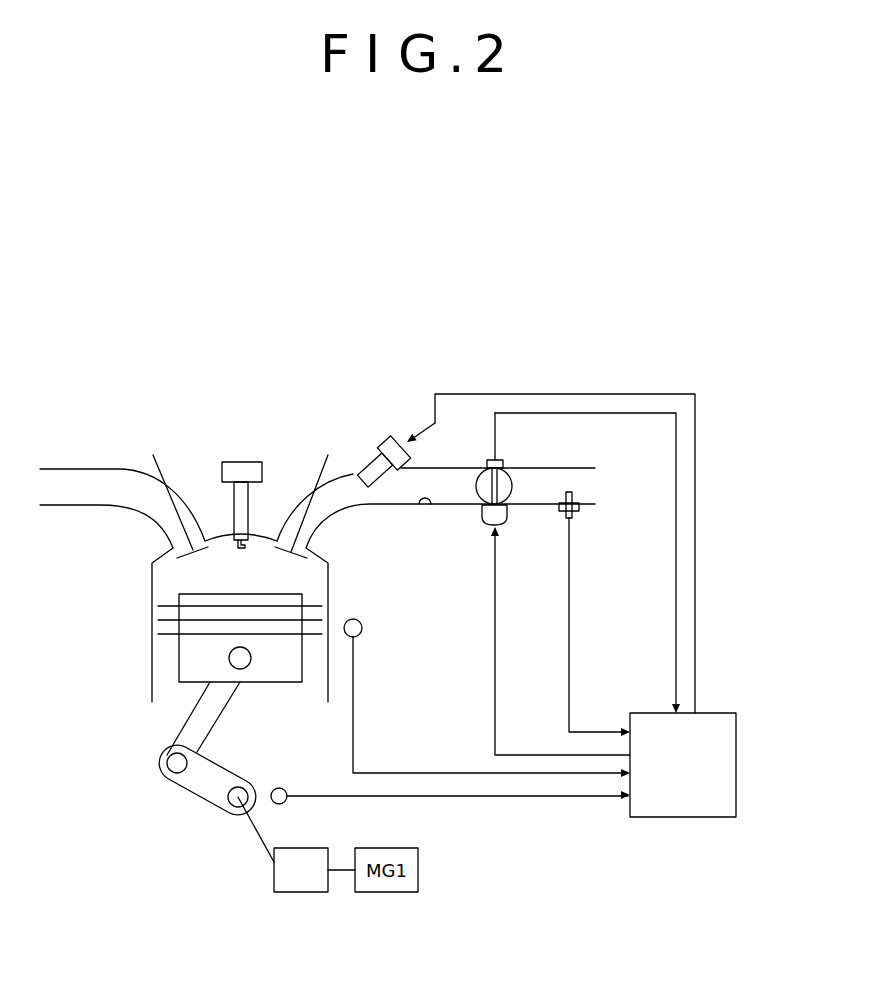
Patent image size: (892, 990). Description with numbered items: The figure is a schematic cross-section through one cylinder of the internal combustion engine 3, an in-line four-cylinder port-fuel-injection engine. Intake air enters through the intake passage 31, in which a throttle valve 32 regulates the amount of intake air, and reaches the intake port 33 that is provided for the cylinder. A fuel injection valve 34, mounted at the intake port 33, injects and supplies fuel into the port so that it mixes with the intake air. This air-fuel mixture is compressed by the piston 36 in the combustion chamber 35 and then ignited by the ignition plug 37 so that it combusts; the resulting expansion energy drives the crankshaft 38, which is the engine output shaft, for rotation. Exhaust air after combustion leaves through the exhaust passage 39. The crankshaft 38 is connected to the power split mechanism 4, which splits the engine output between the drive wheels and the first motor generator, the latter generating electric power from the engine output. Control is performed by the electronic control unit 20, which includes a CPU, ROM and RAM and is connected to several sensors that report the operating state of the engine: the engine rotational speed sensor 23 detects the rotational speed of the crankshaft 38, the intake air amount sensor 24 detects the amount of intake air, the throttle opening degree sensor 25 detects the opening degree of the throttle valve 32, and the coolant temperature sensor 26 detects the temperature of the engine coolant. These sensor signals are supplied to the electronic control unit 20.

The internal combustion engine 3 is at (304, 365).
The power split mechanism 4 is at (312, 893).
The electronic control unit 20 is at (725, 712).
The engine rotational speed sensor 23 is at (285, 788).
The intake air amount sensor 24 is at (578, 510).
The throttle opening degree sensor 25 is at (487, 461).
The coolant temperature sensor 26 is at (362, 618).
The intake passage 31 is at (571, 468).
The throttle valve 32 is at (513, 479).
The intake port 33 is at (431, 505).
The fuel injection valve 34 is at (378, 442).
The combustion chamber 35 is at (175, 572).
The piston 36 is at (290, 683).
The ignition plug 37 is at (241, 461).
The crankshaft 38 is at (237, 777).
The exhaust passage 39 is at (59, 505).